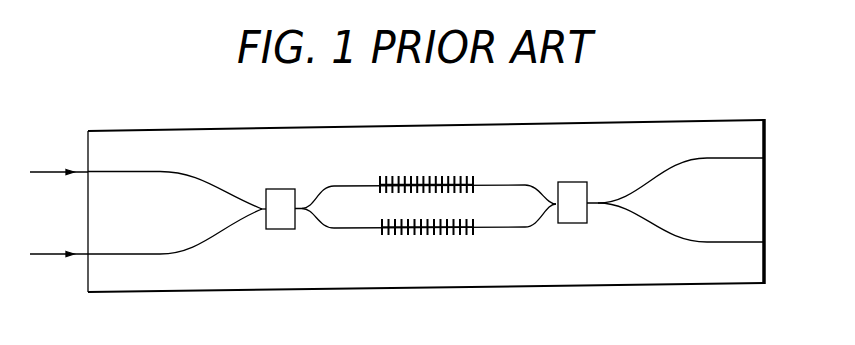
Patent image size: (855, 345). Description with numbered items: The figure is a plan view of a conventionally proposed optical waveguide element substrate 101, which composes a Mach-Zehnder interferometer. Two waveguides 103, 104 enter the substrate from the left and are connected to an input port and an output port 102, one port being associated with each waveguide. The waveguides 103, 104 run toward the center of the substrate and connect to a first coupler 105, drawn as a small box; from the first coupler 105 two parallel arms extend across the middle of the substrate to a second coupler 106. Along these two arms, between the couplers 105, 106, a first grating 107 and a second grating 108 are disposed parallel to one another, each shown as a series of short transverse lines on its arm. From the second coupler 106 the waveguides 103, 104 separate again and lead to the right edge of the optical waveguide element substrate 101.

The optical waveguide element substrate 101 is at (700, 118).
The input port and output port 102 is at (87, 171).
The waveguide 103 is at (200, 181).
The waveguide 104 is at (207, 236).
The first coupler 105 is at (283, 188).
The second coupler 106 is at (573, 181).
The first grating 107 is at (433, 179).
The second grating 108 is at (435, 236).